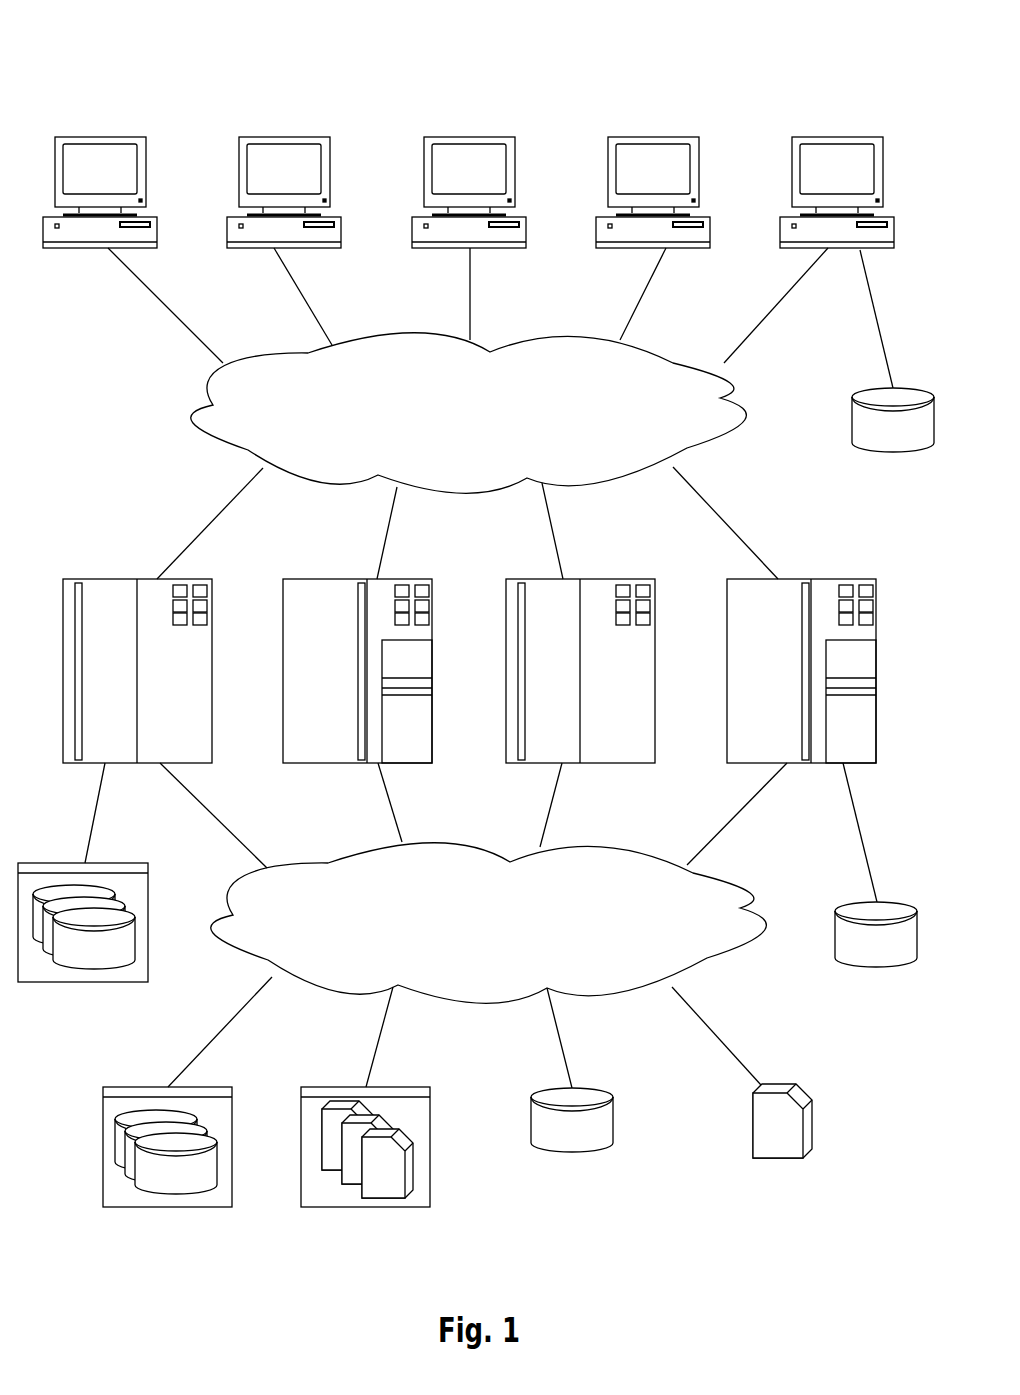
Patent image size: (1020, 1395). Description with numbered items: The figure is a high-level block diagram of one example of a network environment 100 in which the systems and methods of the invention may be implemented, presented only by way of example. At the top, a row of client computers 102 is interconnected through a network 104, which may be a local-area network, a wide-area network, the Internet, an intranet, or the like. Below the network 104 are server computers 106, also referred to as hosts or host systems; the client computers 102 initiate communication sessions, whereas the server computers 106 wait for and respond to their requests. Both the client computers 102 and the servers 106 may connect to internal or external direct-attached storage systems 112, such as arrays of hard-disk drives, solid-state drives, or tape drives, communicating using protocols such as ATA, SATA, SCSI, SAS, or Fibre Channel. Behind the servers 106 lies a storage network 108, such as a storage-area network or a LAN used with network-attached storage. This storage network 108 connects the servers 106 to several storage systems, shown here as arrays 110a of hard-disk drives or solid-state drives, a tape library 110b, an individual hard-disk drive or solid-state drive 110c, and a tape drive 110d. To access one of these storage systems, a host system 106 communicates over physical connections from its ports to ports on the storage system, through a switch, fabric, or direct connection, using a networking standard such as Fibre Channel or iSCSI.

The network environment 100 is at (180, 68).
The client computer 102 is at (83, 179).
The network 104 is at (452, 437).
The server computer 106 is at (92, 682).
The storage network 108 is at (472, 947).
The array of hard-disk drives or solid-state drives 110a is at (165, 1208).
The tape library 110b is at (367, 1208).
The individual hard-disk drive or solid-state drive 110c is at (570, 1153).
The tape drive 110d is at (777, 1160).
The direct-attached storage system 112 is at (893, 452).